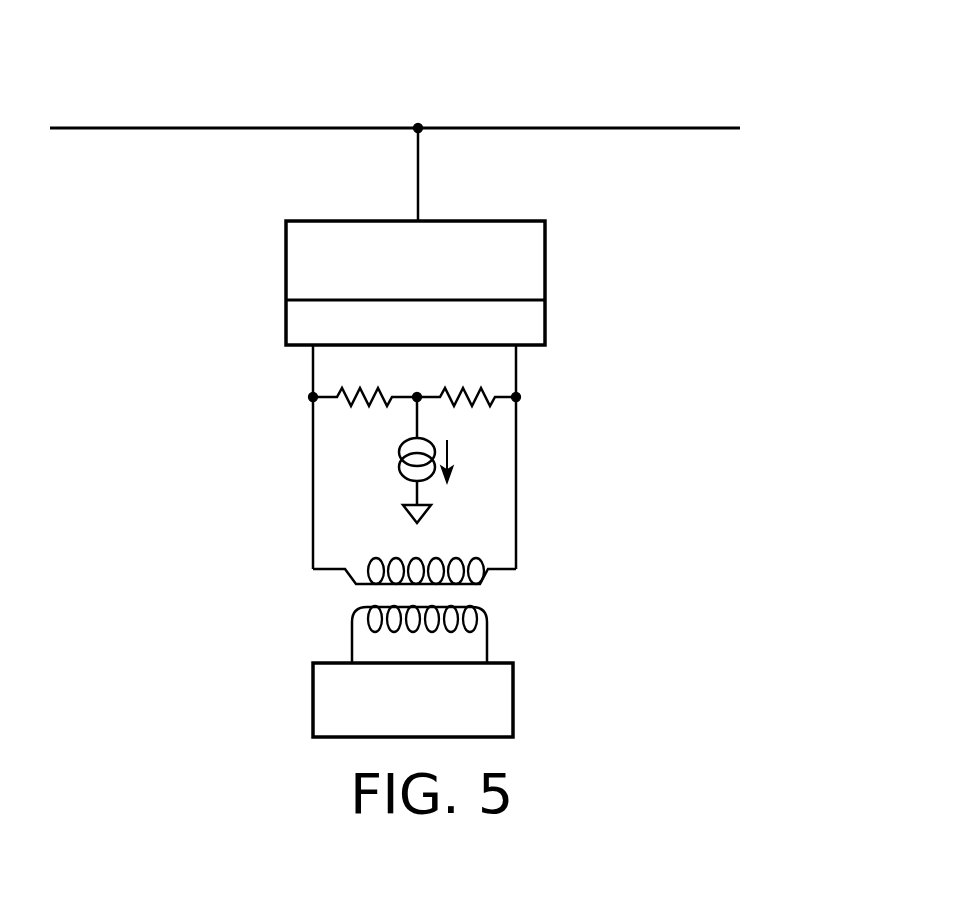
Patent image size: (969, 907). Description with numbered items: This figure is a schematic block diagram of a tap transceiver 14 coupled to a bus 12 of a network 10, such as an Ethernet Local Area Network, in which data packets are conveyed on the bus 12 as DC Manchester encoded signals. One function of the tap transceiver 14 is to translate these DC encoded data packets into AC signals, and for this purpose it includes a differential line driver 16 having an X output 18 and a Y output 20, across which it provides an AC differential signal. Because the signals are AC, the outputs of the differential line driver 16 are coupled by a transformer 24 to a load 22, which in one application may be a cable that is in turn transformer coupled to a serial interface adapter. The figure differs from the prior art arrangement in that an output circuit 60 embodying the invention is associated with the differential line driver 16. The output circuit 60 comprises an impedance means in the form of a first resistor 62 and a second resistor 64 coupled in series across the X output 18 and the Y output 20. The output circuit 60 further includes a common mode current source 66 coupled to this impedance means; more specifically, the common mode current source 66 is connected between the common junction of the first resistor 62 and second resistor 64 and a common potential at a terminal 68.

The network 10 is at (651, 112).
The bus 12 is at (515, 127).
The tap transceiver 14 is at (537, 270).
The differential line driver 16 is at (537, 328).
The X output 18 is at (522, 352).
The Y output 20 is at (306, 352).
The load 22 is at (500, 692).
The transformer 24 is at (493, 596).
The output circuit 60 is at (396, 461).
The first resistor 62 is at (360, 389).
The second resistor 64 is at (457, 389).
The common mode current source 66 is at (403, 446).
The terminal 68 is at (421, 520).